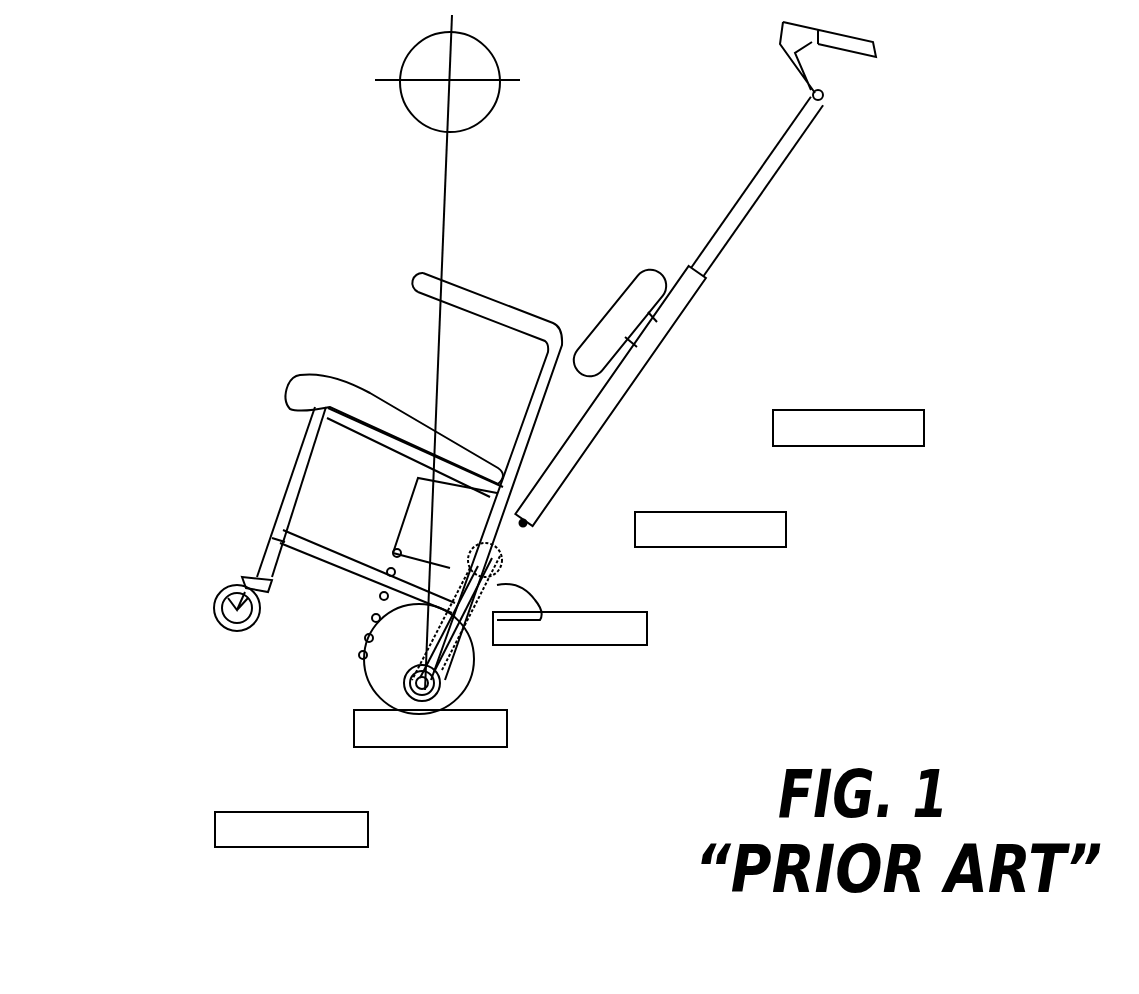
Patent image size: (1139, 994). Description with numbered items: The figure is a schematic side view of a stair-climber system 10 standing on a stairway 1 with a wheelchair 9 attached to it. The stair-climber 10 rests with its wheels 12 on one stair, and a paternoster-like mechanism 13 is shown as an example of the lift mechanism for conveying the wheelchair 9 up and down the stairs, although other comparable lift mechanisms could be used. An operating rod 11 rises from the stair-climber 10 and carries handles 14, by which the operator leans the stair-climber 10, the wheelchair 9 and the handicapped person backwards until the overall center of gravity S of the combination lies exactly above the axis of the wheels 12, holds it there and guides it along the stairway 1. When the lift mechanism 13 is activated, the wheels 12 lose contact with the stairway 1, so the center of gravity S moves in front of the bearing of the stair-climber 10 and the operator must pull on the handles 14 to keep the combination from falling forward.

The stairway 1 is at (895, 430).
The wheelchair 9 is at (347, 395).
The stair-climber system 10 is at (453, 528).
The operating rod 11 is at (633, 392).
The wheels 12 is at (385, 680).
The paternoster-like mechanism 13 is at (496, 608).
The handles 14 is at (848, 52).
The center of gravity S is at (450, 352).